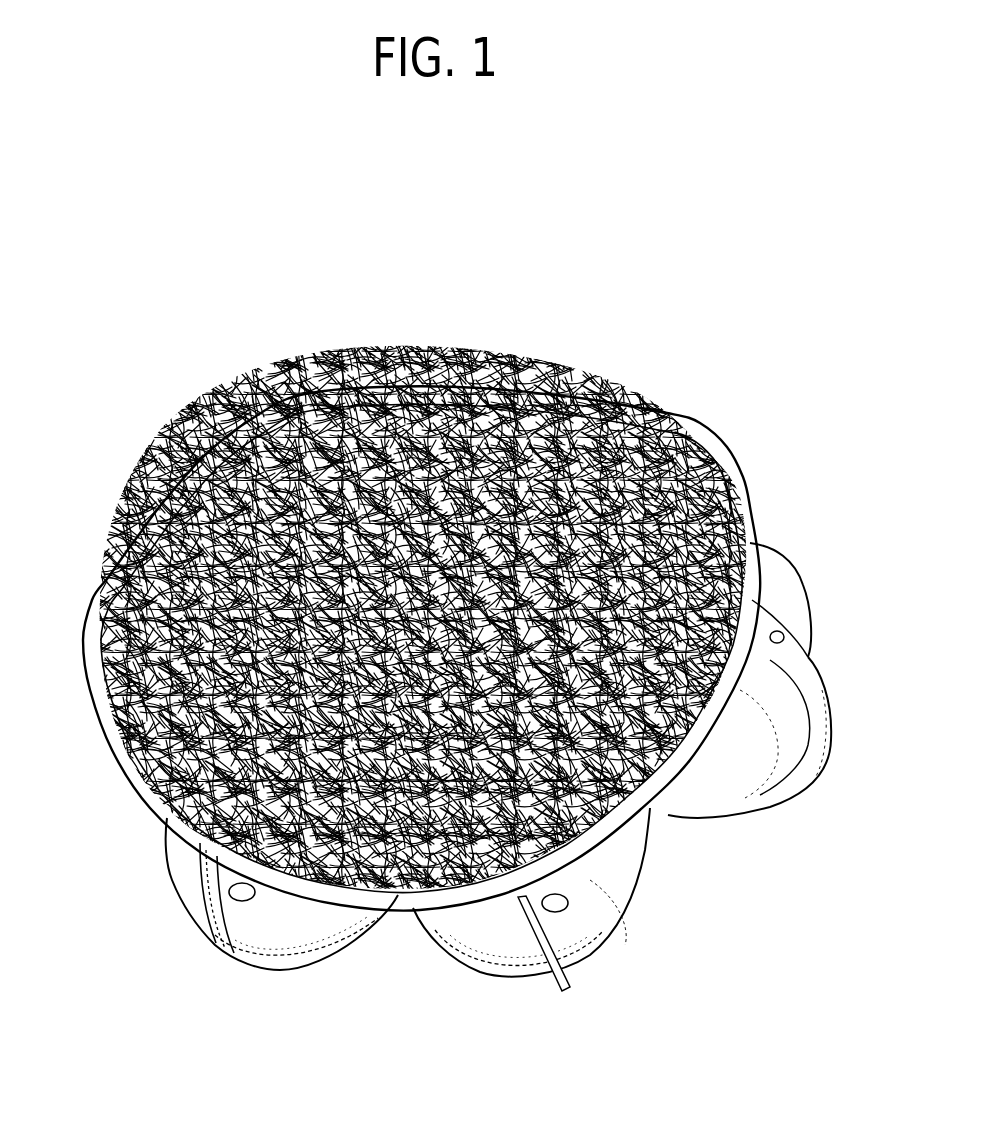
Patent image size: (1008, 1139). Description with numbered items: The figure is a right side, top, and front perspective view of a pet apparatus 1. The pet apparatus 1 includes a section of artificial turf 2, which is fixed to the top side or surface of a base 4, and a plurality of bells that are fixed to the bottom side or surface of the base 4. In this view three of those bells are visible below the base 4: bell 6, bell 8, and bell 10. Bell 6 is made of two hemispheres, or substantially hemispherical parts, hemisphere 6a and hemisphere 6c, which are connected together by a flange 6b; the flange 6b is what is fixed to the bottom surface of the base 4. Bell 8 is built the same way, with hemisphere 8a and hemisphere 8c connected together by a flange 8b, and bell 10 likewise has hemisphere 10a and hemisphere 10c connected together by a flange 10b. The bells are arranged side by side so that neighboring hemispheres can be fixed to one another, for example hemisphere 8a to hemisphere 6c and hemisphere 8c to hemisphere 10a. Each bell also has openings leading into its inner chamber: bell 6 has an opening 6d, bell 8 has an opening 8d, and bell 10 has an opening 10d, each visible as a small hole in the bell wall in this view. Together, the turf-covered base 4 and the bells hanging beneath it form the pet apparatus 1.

The pet apparatus 1 is at (600, 300).
The section of artificial turf 2 is at (318, 408).
The base 4 is at (652, 820).
The bell 6 is at (168, 848).
The hemisphere 6a is at (175, 885).
The flange 6b is at (220, 940).
The hemisphere 6c is at (303, 913).
The opening 6d is at (242, 895).
The bell 8 is at (490, 960).
The hemisphere 8a is at (517, 962).
The flange 8b is at (563, 992).
The hemisphere 8c is at (605, 883).
The opening 8d is at (558, 907).
The bell 10 is at (720, 788).
The hemisphere 10a is at (745, 777).
The flange 10b is at (807, 763).
The hemisphere 10c is at (792, 640).
The opening 10d is at (778, 631).